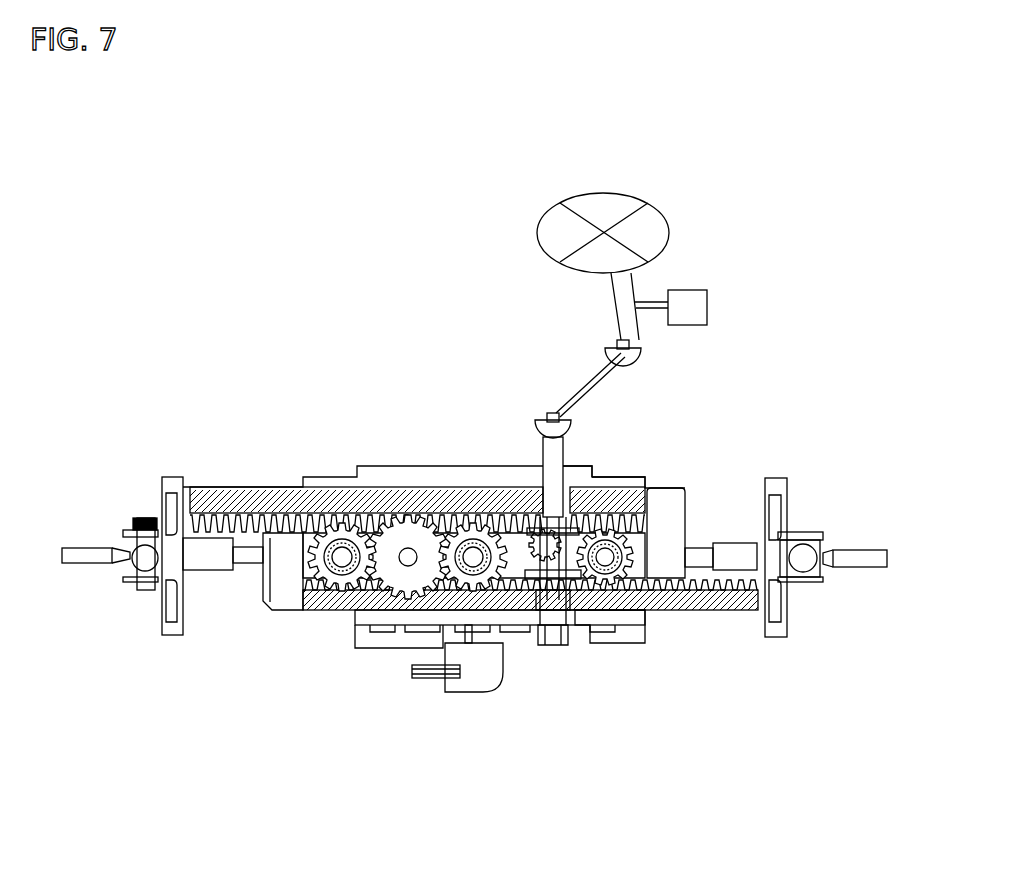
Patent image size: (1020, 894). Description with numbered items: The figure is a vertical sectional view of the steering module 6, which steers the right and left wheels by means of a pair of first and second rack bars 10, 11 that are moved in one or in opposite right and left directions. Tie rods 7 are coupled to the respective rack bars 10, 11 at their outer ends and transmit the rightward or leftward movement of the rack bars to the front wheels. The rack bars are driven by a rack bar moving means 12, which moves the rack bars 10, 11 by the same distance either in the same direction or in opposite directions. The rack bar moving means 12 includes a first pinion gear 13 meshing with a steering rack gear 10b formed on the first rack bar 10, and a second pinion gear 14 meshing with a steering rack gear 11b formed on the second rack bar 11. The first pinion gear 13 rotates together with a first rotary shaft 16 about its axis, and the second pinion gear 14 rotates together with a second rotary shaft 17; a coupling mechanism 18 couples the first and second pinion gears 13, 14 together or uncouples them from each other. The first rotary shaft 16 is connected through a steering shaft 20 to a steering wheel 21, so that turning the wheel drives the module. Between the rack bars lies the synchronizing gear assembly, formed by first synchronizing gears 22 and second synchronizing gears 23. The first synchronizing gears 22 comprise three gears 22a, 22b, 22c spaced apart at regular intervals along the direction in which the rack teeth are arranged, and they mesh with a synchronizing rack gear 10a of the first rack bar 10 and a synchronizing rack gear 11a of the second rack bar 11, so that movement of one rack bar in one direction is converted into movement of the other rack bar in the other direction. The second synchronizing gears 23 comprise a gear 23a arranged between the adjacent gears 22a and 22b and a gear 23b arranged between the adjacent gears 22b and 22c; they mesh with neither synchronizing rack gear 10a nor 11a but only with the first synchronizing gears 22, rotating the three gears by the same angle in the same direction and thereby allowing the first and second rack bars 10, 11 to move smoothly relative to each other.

The steering module 6 is at (762, 463).
The tie rods 7 is at (100, 553).
The first rack bar 10 is at (210, 487).
The synchronizing rack gear 10a is at (247, 488).
The steering rack gear 10b is at (258, 488).
The second rack bar 11 is at (665, 612).
The synchronizing rack gear 11a is at (690, 612).
The steering rack gear 11b is at (720, 612).
The rack bar moving means 12 is at (579, 452).
The first pinion gear 13 is at (598, 487).
The second pinion gear 14 is at (560, 660).
The first rotary shaft 16 is at (555, 482).
The second rotary shaft 17 is at (545, 625).
The coupling mechanism 18 is at (593, 612).
The steering shaft 20 is at (582, 380).
The steering wheel 21 is at (637, 232).
The first synchronizing gears 22 is at (485, 325).
The gear 22a is at (340, 540).
The gear 22b is at (467, 532).
The gear 22c is at (525, 510).
The second synchronizing gears 23 is at (342, 765).
The gear 23a is at (390, 568).
The gear 23b is at (463, 590).